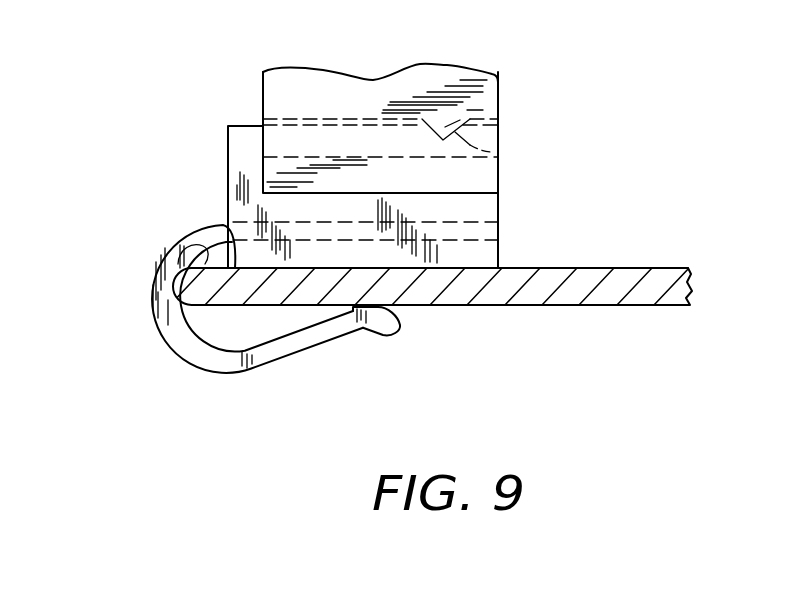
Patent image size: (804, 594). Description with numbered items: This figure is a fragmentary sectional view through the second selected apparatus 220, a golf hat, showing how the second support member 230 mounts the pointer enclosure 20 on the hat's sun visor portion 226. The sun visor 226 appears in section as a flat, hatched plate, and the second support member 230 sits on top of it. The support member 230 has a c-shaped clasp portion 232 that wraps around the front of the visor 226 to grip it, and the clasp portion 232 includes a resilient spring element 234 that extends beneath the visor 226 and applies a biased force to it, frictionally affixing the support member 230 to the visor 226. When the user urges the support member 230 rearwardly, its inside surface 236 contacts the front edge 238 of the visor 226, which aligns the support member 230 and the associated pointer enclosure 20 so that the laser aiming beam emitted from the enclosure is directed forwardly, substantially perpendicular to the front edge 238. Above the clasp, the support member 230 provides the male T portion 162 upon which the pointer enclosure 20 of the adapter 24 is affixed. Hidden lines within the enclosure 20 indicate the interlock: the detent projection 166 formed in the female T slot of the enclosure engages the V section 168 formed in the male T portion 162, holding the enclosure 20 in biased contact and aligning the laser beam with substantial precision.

The pointer enclosure 20 is at (263, 80).
The adapter 24 is at (372, 81).
The male T portion 162 is at (227, 127).
The detent projection 166 is at (498, 111).
The V section 168 is at (498, 156).
The second selected apparatus 220 is at (692, 285).
The sun visor portion 226 is at (525, 268).
The second support member 230 is at (228, 190).
The c-shaped clasp portion 232 is at (227, 315).
The resilient spring element 234 is at (228, 373).
The inside surface 236 is at (173, 247).
The front edge 238 is at (152, 309).